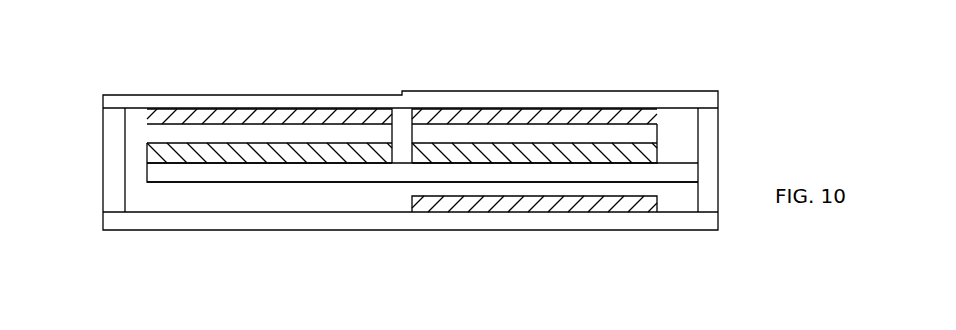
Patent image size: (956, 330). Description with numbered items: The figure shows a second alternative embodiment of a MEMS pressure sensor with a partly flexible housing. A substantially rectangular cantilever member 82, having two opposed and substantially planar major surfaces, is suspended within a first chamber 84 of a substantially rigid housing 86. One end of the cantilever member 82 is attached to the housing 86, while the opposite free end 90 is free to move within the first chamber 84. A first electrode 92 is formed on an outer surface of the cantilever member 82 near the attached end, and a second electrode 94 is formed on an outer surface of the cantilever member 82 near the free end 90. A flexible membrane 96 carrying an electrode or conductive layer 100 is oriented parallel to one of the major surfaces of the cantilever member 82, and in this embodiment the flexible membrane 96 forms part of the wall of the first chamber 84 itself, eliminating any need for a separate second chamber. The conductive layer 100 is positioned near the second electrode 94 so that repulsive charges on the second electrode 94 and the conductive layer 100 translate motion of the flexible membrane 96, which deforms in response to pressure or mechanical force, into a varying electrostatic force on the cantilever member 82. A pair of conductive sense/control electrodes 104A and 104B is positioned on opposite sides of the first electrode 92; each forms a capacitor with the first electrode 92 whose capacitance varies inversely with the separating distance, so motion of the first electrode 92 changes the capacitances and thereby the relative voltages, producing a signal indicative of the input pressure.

The cantilever member 82 is at (147, 174).
The first chamber 84 is at (684, 116).
The housing 86 is at (718, 127).
The free end 90 is at (180, 183).
The first electrode 92 is at (533, 142).
The second electrode 94 is at (182, 143).
The flexible membrane 96 is at (168, 95).
The conductive layer 100 is at (250, 105).
The sense/control electrode 104A is at (462, 108).
The sense/control electrode 104B is at (460, 212).